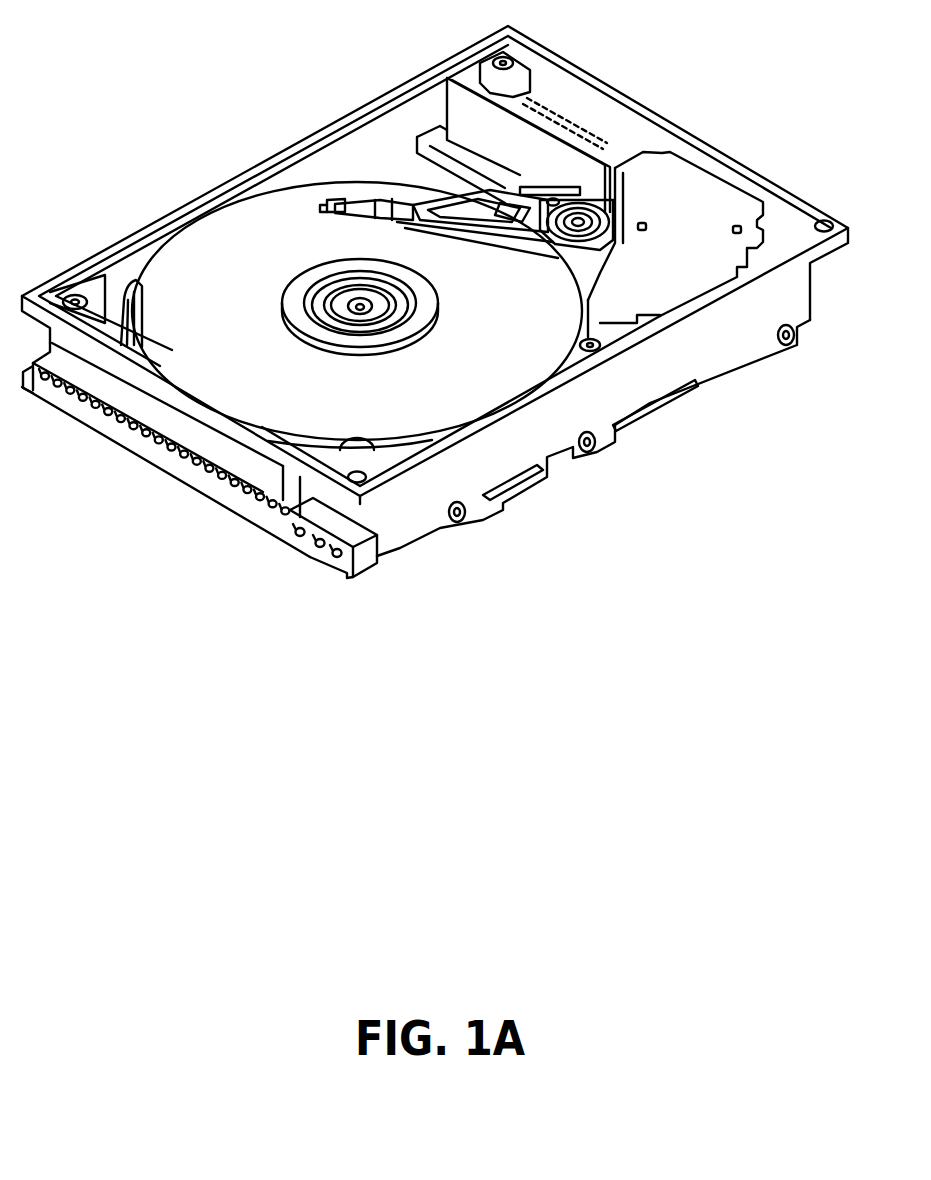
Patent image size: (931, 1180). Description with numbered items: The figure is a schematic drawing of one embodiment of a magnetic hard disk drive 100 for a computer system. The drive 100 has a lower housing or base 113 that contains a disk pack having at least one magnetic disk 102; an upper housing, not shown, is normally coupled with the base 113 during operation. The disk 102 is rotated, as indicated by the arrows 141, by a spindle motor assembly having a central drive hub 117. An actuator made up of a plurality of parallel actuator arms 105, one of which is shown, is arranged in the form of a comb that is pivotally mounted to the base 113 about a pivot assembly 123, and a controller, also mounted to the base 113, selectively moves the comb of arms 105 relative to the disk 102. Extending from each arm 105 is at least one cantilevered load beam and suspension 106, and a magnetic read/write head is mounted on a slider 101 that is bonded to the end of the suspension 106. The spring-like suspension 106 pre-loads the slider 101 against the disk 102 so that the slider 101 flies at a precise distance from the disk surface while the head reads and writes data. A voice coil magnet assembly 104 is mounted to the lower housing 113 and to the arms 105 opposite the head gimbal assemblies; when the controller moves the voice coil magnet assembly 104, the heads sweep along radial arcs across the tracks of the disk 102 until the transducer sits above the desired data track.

The hard disk drive 100 is at (268, 60).
The slider 101 is at (336, 214).
The magnetic disk 102 is at (222, 242).
The voice coil magnet assembly 104 is at (697, 185).
The actuator arm 105 is at (466, 233).
The suspension 106 is at (377, 218).
The base 113 is at (723, 365).
The central drive hub 117 is at (360, 309).
The pivot assembly 123 is at (568, 227).
The arrows 141 is at (247, 370).